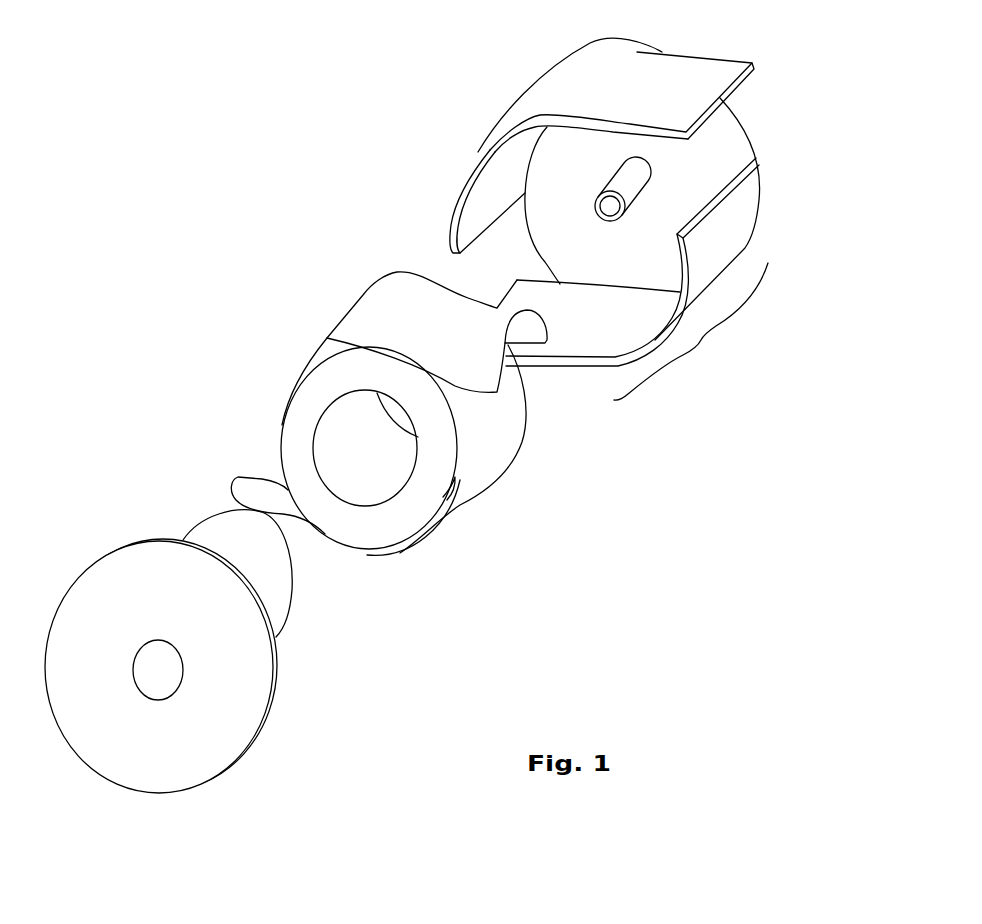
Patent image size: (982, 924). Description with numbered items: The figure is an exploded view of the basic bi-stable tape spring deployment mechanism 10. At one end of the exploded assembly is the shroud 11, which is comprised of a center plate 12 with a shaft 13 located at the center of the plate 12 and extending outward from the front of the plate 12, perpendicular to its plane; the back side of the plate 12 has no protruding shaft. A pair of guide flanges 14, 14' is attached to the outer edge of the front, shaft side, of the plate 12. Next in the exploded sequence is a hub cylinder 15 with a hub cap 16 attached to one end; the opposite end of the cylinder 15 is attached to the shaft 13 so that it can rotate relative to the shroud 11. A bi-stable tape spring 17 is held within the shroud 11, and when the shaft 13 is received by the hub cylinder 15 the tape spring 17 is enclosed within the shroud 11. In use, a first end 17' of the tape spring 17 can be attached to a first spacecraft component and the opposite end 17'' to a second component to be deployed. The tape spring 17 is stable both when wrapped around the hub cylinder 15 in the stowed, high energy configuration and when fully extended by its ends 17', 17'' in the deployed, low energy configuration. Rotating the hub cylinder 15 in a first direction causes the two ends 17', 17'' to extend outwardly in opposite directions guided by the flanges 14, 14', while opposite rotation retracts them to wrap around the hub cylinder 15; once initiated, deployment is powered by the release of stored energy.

The bi-stable tape spring deployment mechanism 10 is at (269, 193).
The shroud 11 is at (691, 331).
The center plate 12 is at (713, 152).
The shaft 13 is at (630, 185).
The guide flange 14 is at (608, 78).
The guide flange 14' is at (473, 186).
The hub cylinder 15 is at (272, 582).
The hub cap 16 is at (202, 717).
The bi-stable tape spring 17 is at (408, 472).
The first end of the tape spring 17' is at (459, 412).
The opposite end of the tape spring 17'' is at (231, 457).